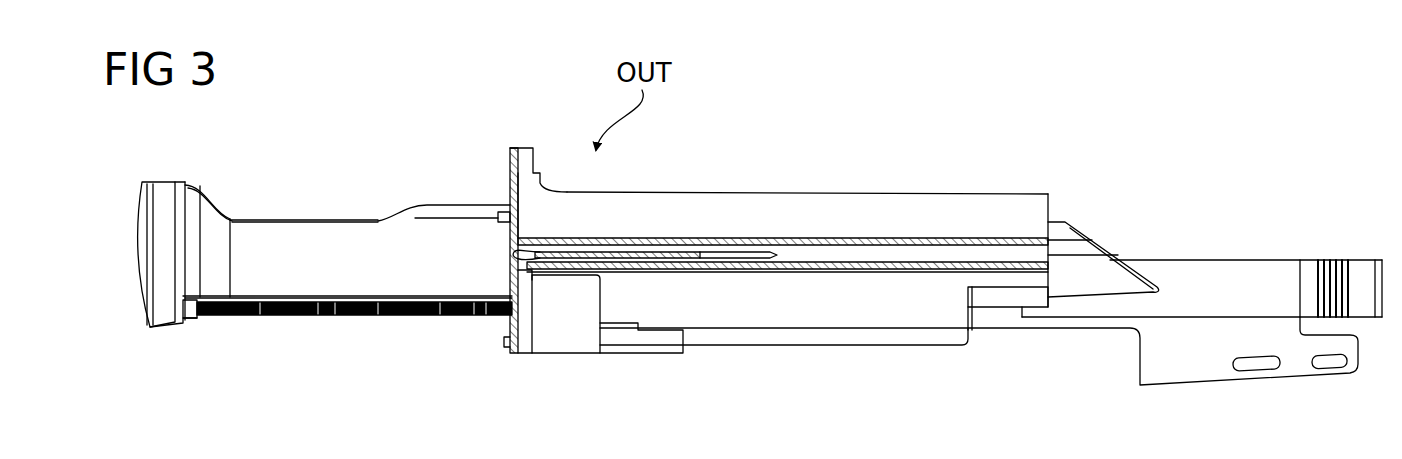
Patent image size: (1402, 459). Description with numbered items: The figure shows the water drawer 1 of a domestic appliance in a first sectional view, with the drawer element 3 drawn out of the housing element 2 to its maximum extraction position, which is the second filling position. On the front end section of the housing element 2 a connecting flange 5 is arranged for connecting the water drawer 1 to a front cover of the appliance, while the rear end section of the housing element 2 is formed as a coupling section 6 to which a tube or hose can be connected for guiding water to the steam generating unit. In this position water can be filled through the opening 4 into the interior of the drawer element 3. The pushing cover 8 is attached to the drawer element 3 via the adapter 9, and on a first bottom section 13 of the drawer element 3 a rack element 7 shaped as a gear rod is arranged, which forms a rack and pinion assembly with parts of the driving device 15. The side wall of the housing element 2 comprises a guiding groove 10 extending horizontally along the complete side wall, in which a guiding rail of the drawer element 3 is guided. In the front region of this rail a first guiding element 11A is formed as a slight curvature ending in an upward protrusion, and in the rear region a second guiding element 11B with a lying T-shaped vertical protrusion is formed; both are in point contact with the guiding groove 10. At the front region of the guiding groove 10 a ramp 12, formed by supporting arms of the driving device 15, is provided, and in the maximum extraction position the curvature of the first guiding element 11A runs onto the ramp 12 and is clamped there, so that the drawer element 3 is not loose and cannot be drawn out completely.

The water drawer 1 is at (869, 134).
The housing element 2 is at (1007, 194).
The drawer element 3 is at (460, 236).
The opening 4 is at (323, 218).
The connecting flange 5 is at (508, 168).
The coupling section 6 is at (1362, 287).
The rack element 7 is at (350, 318).
The pushing cover 8 is at (143, 257).
The adapter 9 is at (190, 220).
The guiding groove 10 is at (808, 240).
The first guiding element 11A is at (510, 258).
The second guiding element 11B is at (714, 262).
The ramp 12 is at (545, 285).
The first bottom section 13 is at (400, 300).
The driving device 15 is at (571, 322).